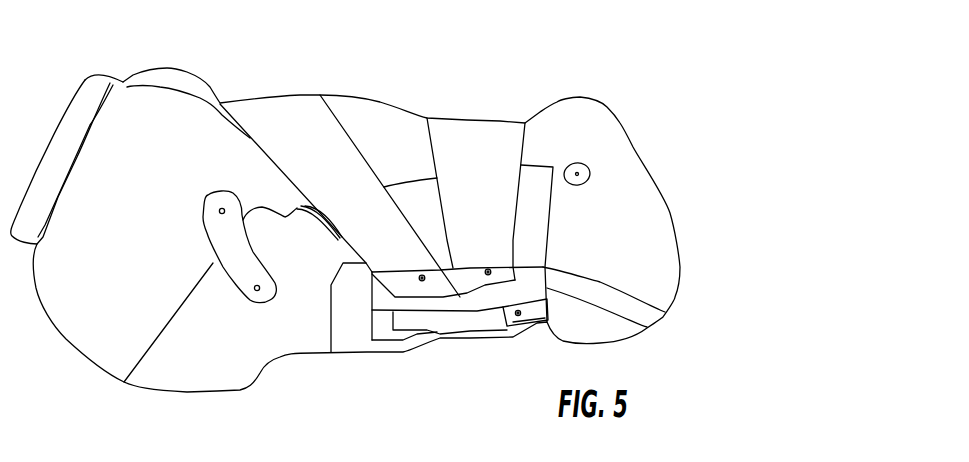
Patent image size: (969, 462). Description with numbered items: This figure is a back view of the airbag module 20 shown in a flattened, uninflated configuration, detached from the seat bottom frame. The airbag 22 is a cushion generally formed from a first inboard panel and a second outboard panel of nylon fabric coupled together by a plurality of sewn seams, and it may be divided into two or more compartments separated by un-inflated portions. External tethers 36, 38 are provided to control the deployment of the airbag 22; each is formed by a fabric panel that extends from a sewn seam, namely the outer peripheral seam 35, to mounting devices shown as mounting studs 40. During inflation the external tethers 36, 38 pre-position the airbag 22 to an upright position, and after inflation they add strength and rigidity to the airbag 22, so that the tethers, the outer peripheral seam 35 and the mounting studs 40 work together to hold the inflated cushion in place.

The airbag module 20 is at (305, 392).
The airbag 22 is at (218, 370).
The outer peripheral seam 35 is at (380, 102).
The external tether 36 is at (297, 120).
The external tether 38 is at (503, 133).
The mounting studs 40 is at (422, 282).